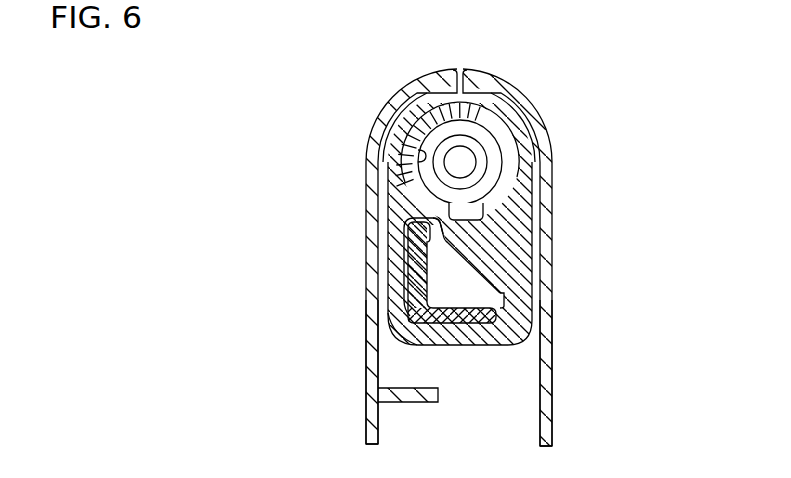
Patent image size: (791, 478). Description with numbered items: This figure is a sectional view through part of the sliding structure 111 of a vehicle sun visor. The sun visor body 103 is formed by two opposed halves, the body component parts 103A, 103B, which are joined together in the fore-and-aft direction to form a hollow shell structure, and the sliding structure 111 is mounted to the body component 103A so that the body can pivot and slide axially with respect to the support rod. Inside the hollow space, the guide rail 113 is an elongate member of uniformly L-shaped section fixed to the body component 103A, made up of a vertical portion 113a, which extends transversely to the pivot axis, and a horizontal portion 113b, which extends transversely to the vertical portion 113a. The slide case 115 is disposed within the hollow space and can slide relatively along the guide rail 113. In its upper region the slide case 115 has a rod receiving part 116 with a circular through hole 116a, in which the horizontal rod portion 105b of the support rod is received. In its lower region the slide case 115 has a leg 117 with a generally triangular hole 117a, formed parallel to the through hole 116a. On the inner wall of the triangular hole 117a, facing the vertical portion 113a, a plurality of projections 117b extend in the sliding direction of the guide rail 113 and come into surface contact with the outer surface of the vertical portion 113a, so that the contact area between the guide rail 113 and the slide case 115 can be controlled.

The sun visor body 103 is at (418, 84).
The body component part 103A is at (550, 392).
The body component part 103B is at (373, 426).
The sliding structure 111 is at (508, 113).
The guide rail 113 is at (380, 348).
The vertical portion 113a is at (418, 259).
The horizontal portion 113b is at (437, 325).
The slide case 115 is at (523, 236).
The rod receiving part 116 is at (477, 105).
The circular through hole 116a is at (420, 152).
The horizontal rod portion 105b is at (487, 150).
The leg 117 is at (477, 345).
The triangular hole 117a is at (455, 285).
The projection 117b is at (405, 229).